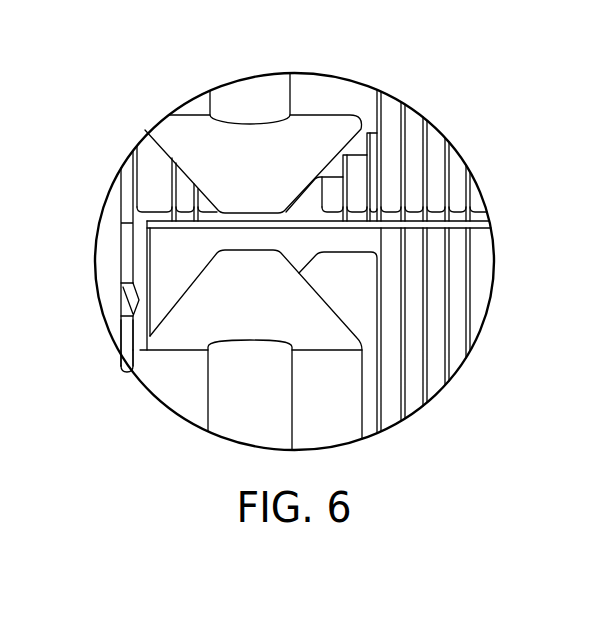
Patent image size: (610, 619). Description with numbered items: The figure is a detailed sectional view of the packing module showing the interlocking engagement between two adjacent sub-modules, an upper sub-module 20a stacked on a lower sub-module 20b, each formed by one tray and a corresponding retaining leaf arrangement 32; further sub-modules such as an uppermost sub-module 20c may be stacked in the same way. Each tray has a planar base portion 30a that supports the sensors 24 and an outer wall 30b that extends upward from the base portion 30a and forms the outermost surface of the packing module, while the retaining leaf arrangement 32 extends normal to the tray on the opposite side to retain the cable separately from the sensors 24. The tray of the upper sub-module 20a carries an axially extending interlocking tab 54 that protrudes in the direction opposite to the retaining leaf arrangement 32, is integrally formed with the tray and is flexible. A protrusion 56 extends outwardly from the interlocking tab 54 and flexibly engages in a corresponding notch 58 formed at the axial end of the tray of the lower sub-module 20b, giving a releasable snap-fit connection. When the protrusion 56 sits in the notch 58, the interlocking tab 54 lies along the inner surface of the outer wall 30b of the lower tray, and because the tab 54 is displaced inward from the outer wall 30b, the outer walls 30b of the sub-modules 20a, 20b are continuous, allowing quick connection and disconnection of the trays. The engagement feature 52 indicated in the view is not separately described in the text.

The sensor 24 is at (196, 142).
The upper sub-module 20a is at (345, 100).
The lower sub-module 20b is at (430, 289).
The uppermost sub-module 20c is at (14, 524).
The base portion 30a is at (130, 186).
The outer wall 30b is at (130, 368).
The retaining leaf arrangement 32 is at (420, 166).
The retention feature 52 is at (101, 280).
The interlocking tab 54 is at (146, 259).
The protrusion 56 is at (142, 296).
The notch 58 is at (122, 336).